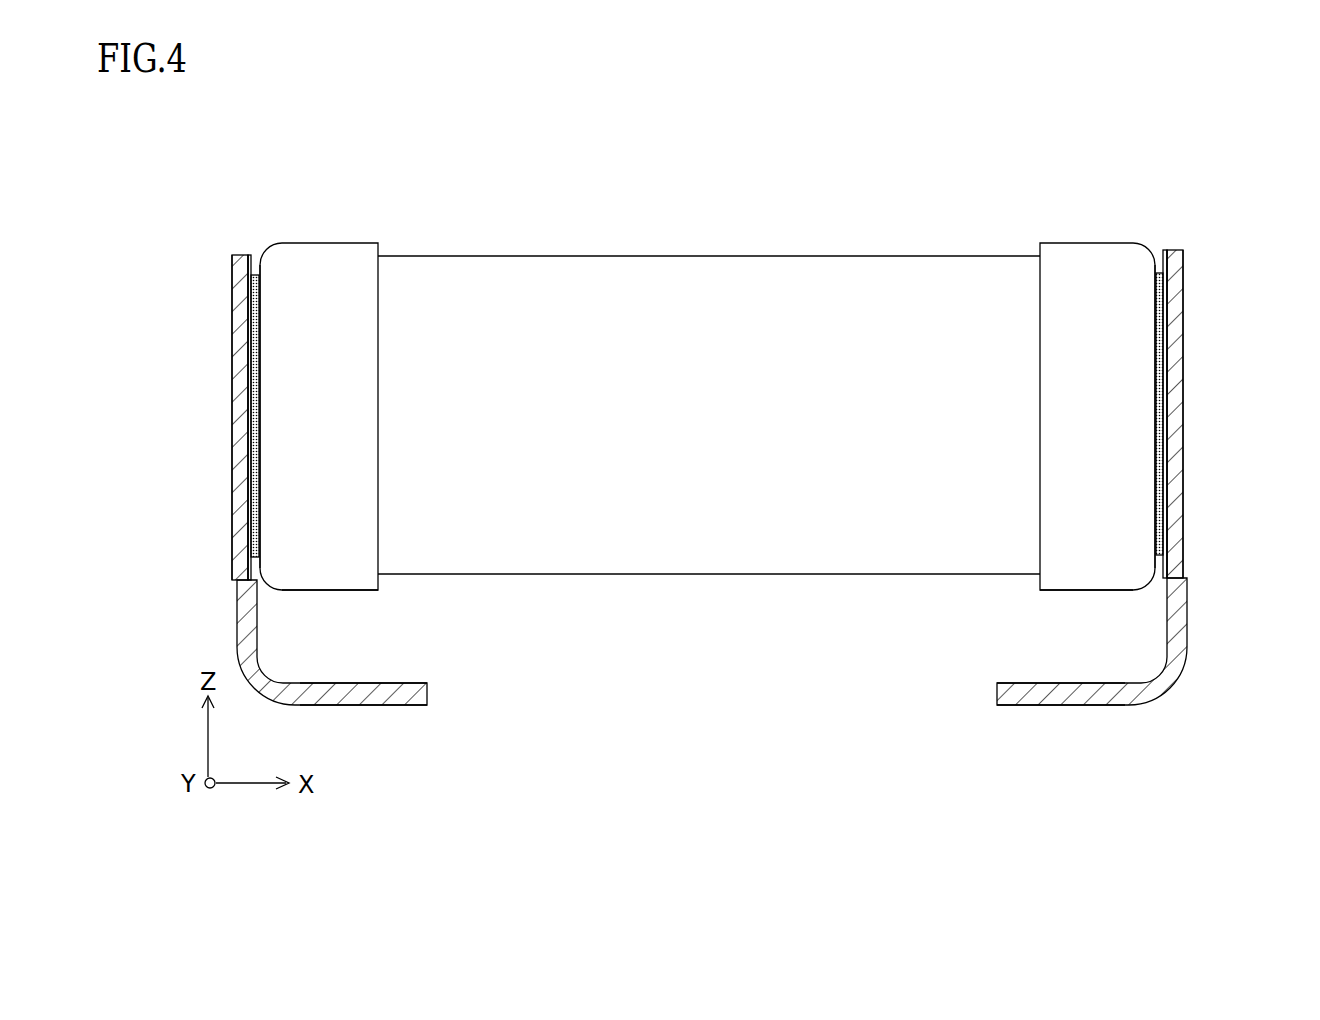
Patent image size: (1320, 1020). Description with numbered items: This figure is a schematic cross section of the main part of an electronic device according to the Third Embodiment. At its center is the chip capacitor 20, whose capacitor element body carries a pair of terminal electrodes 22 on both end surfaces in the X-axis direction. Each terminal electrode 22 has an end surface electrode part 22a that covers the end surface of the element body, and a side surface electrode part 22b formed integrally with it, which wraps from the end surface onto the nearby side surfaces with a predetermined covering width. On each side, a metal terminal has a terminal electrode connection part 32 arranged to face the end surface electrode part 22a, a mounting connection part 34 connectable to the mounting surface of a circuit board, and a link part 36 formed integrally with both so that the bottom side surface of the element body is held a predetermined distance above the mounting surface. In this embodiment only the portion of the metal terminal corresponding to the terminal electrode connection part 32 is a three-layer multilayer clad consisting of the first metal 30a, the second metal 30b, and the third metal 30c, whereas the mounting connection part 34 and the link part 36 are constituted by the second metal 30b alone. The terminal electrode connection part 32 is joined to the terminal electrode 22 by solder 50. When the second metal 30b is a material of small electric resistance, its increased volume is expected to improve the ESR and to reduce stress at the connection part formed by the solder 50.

The chip capacitor 20 is at (657, 252).
The terminal electrode 22 is at (321, 266).
The end surface electrode part 22a is at (270, 423).
The side surface electrode part 22b is at (383, 580).
The first metal 30a is at (256, 262).
The second metal 30b is at (234, 317).
The third metal 30c is at (232, 282).
The terminal electrode connection part 32 is at (240, 543).
The mounting connection part 34 is at (378, 692).
The link part 36 is at (245, 636).
The solder 50 is at (260, 540).